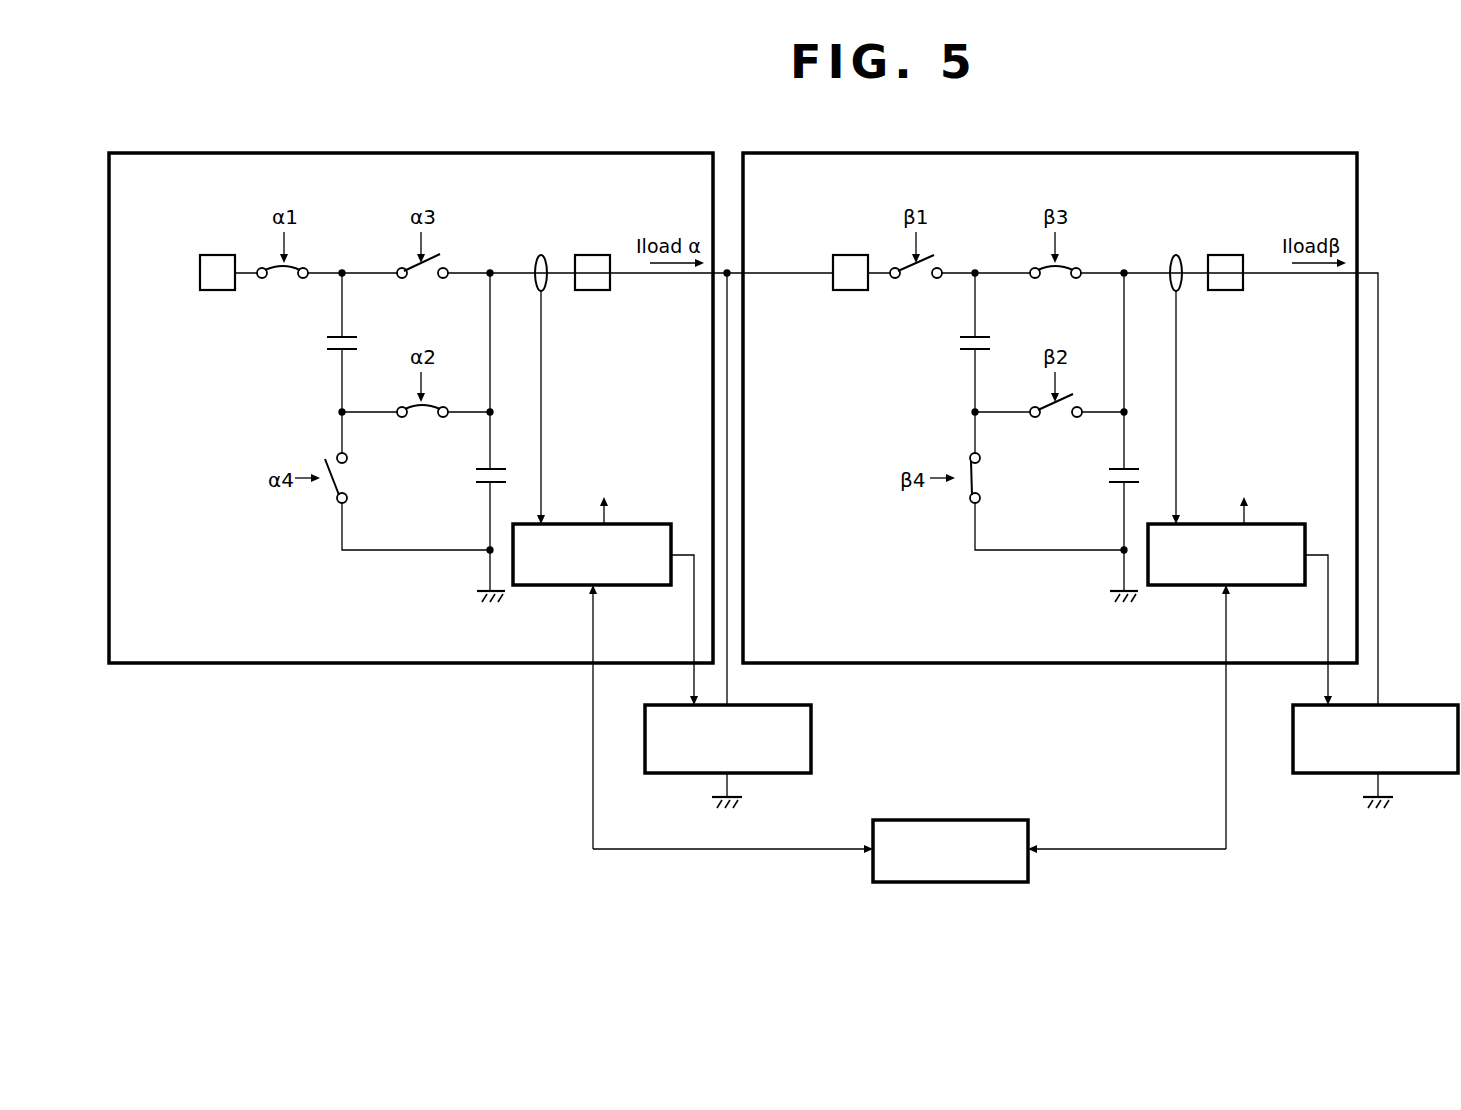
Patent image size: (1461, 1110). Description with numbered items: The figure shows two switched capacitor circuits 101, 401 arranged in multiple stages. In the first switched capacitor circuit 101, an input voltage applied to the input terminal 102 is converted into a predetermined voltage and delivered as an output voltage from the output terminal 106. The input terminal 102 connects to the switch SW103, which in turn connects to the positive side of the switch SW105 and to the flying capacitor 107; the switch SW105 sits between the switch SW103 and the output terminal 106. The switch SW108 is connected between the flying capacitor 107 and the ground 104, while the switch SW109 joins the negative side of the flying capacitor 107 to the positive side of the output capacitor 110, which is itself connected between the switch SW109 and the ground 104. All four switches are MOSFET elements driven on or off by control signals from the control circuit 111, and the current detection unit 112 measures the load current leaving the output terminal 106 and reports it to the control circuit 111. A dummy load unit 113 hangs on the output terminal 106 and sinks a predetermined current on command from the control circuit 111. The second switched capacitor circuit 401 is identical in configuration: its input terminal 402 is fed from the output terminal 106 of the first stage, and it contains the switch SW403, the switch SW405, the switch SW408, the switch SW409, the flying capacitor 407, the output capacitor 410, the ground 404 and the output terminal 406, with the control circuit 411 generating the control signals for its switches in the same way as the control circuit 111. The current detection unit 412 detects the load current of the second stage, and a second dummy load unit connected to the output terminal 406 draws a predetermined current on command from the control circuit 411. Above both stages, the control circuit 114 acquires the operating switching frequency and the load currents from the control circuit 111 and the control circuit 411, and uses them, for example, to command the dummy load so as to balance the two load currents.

The switched capacitor circuit 101 is at (157, 153).
The input terminal 102 is at (218, 255).
The switch SW103 is at (262, 280).
The ground 104 is at (477, 600).
The switch SW105 is at (407, 279).
The output terminal 106 is at (593, 255).
The flying capacitor Cfly 107 is at (330, 337).
The switch SW108 is at (338, 455).
The switch SW109 is at (400, 418).
The output capacitor Cout 110 is at (481, 485).
The control circuit 111 is at (617, 586).
The current detection unit 112 is at (545, 292).
The dummy load unit α 113 is at (813, 726).
The control circuit 114 is at (966, 820).
The second switched capacitor circuit 401 is at (791, 153).
The input terminal 402 is at (851, 255).
The switch SW403 is at (895, 280).
The ground 404 is at (1110, 600).
The switch SW405 is at (1040, 279).
The output terminal 406 is at (1226, 255).
The flying capacitor Cfly 407 is at (963, 337).
The switch SW408 is at (971, 455).
The switch SW409 is at (1033, 418).
The output capacitor Cout 410 is at (1114, 485).
The control circuit 411 is at (1250, 586).
The current detection unit 412 is at (1180, 292).